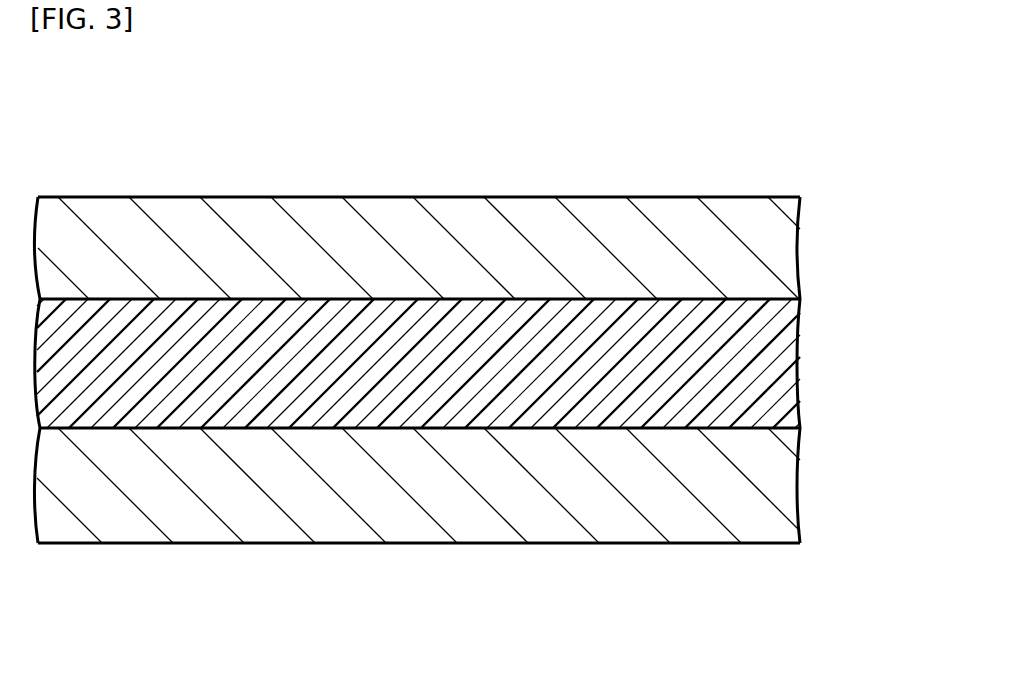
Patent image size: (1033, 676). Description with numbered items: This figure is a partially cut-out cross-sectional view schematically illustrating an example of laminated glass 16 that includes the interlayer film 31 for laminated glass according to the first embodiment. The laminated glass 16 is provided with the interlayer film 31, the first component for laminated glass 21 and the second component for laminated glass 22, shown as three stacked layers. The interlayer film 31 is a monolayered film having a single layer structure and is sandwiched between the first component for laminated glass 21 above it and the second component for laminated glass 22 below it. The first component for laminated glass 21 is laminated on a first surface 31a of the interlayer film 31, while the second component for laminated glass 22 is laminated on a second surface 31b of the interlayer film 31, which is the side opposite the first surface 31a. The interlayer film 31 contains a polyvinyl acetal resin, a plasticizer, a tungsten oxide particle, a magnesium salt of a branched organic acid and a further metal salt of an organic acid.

The laminated glass 16 is at (201, 160).
The first component for laminated glass 21 is at (800, 242).
The second component for laminated glass 22 is at (800, 488).
The interlayer film 31 is at (815, 361).
The first surface 31a is at (473, 297).
The second surface 31b is at (463, 428).